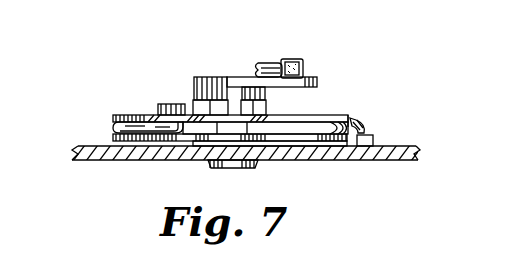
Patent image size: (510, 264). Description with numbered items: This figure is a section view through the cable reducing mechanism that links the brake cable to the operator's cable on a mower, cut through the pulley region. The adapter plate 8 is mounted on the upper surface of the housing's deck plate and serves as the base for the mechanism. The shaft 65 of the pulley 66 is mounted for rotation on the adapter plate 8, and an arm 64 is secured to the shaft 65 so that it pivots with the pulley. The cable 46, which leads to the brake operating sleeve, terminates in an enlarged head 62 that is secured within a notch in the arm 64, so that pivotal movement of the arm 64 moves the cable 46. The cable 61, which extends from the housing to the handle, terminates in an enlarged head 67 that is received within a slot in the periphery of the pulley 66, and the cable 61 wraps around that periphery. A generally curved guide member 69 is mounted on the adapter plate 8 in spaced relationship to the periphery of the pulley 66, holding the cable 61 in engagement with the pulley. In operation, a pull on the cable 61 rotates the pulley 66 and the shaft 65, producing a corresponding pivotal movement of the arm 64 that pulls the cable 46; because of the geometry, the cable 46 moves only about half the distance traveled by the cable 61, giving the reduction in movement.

The adapter plate 8 is at (106, 160).
The cable 46 is at (262, 64).
The cable 61 is at (114, 127).
The enlarged head 62 is at (303, 61).
The arm 64 is at (312, 88).
The shaft 65 is at (225, 77).
The pulley 66 is at (118, 122).
The enlarged head 67 is at (171, 104).
The guide member 69 is at (364, 124).